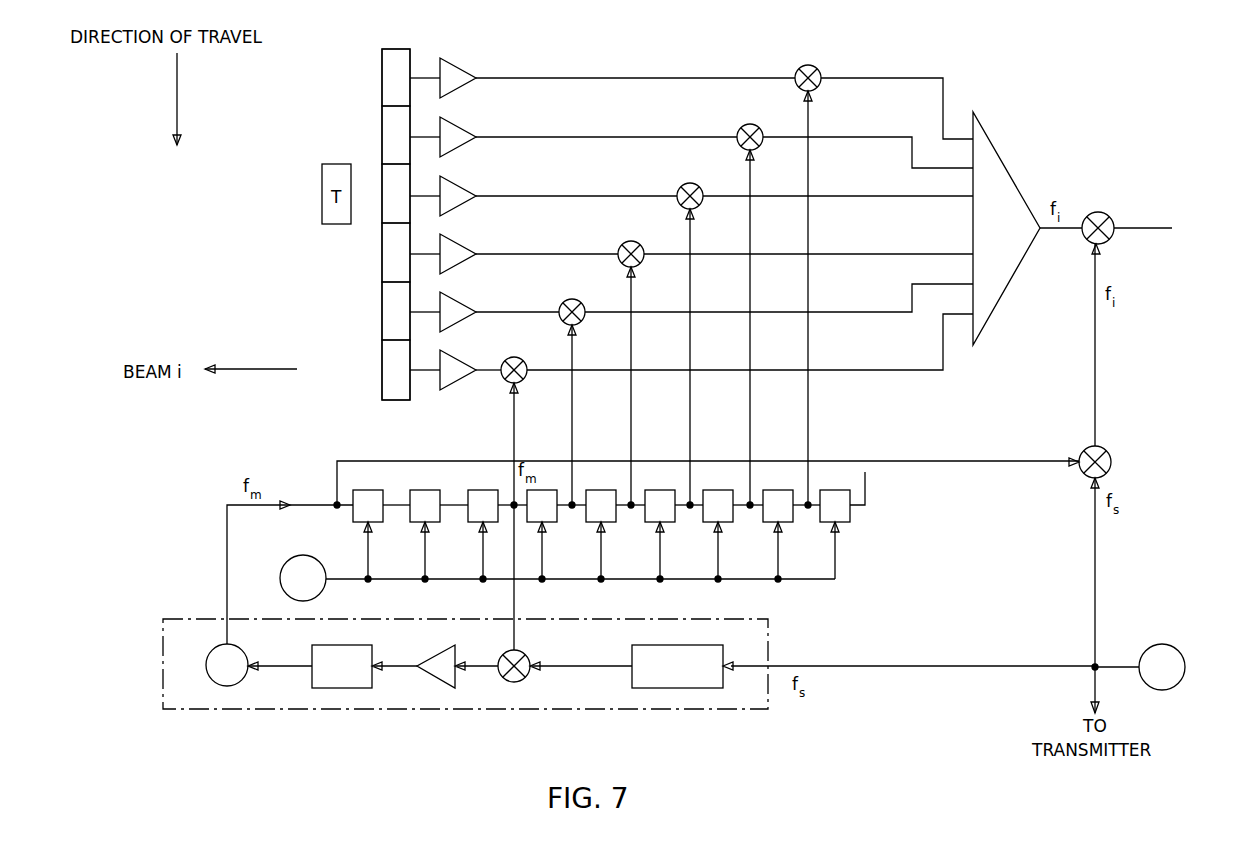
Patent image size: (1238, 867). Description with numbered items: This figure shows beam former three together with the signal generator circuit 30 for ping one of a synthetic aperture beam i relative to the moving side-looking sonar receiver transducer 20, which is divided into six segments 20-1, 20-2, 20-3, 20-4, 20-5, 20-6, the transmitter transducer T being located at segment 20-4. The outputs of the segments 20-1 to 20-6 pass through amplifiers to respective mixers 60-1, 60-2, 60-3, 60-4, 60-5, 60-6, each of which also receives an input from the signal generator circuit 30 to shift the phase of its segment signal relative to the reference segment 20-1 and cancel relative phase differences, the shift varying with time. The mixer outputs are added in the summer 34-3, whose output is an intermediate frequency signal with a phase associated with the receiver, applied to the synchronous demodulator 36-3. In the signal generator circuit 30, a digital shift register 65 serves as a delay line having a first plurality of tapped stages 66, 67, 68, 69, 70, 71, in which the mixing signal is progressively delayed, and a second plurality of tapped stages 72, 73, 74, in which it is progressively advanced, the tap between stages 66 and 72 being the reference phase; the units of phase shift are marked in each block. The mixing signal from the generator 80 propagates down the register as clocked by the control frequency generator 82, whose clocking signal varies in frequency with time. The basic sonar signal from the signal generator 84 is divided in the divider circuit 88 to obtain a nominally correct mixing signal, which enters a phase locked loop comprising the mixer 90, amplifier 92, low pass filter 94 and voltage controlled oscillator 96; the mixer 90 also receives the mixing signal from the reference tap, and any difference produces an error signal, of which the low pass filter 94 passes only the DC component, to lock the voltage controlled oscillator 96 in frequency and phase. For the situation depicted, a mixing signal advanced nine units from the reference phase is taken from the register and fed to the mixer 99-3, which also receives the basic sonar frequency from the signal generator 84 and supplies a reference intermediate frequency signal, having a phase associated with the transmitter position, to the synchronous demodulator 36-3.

The side-looking sonar receiver transducer 20 is at (410, 45).
The transducer segment 20-1 is at (382, 366).
The transducer segment 20-2 is at (382, 307).
The transducer segment 20-3 is at (382, 244).
The transducer segment 20-4 is at (382, 174).
The transducer segment 20-5 is at (382, 117).
The transducer segment 20-6 is at (382, 80).
The mixer 60-1 is at (517, 357).
The mixer 60-2 is at (574, 299).
The mixer 60-3 is at (632, 241).
The mixer 60-4 is at (689, 183).
The mixer 60-5 is at (751, 124).
The mixer 60-6 is at (808, 65).
The summer 34-3 is at (998, 147).
The synchronous demodulator 36-3 is at (1098, 212).
The mixer 99-3 is at (1105, 448).
The signal generator 84 is at (1162, 644).
The control frequency generator 82 is at (283, 577).
The digital shift register 65 is at (640, 601).
The tapped stage 66 is at (549, 534).
The tapped stage 67 is at (608, 534).
The tapped stage 68 is at (667, 534).
The tapped stage 69 is at (725, 534).
The tapped stage 70 is at (785, 534).
The tapped stage 71 is at (843, 534).
The tapped stage 72 is at (475, 534).
The tapped stage 73 is at (417, 534).
The tapped stage 74 is at (360, 534).
The signal generator circuit 30 is at (492, 736).
The generator 80 is at (172, 619).
The divider circuit 88 is at (632, 651).
The mixer 90 is at (522, 655).
The amplifier 92 is at (440, 648).
The low pass filter 94 is at (312, 647).
The voltage controlled oscillator 96 is at (210, 660).